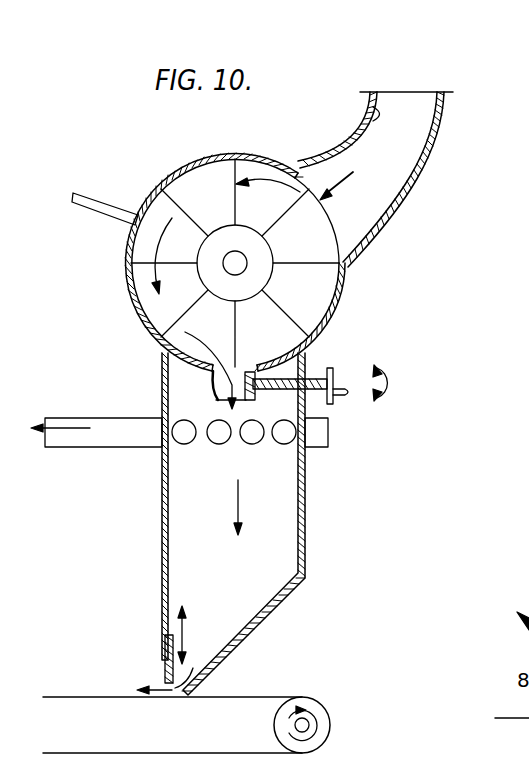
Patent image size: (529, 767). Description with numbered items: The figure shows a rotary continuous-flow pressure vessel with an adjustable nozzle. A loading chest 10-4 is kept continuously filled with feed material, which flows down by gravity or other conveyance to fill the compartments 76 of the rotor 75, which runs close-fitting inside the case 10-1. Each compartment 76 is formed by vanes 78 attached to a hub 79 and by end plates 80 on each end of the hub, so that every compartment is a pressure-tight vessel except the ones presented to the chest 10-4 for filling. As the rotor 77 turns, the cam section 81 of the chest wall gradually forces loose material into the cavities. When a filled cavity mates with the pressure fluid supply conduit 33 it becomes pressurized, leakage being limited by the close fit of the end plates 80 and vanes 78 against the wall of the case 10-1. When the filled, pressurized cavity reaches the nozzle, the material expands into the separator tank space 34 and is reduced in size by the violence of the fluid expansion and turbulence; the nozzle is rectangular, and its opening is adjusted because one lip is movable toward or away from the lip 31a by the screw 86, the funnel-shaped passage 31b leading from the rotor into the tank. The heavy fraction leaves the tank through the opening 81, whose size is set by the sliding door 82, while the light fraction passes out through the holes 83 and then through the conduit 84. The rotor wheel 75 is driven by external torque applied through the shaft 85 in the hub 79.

The case 10-1 is at (212, 157).
The loading chest 10-4 is at (394, 154).
The pressure fluid supply conduit 33 is at (108, 202).
The rotor 75 is at (362, 233).
The compartment 76 is at (219, 205).
The rotor 77 is at (350, 179).
The vanes 78 is at (312, 265).
The hub 79 is at (248, 229).
The end plates 80 is at (326, 229).
The cam section / opening 81 is at (374, 114).
The sliding door 82 is at (173, 673).
The holes 83 is at (192, 443).
The conduit 84 is at (108, 448).
The shaft 85 is at (233, 267).
The screw 86 is at (318, 373).
The lip 31a is at (246, 402).
The discharge funnel 31b is at (217, 392).
The separator tank space 34 is at (246, 576).